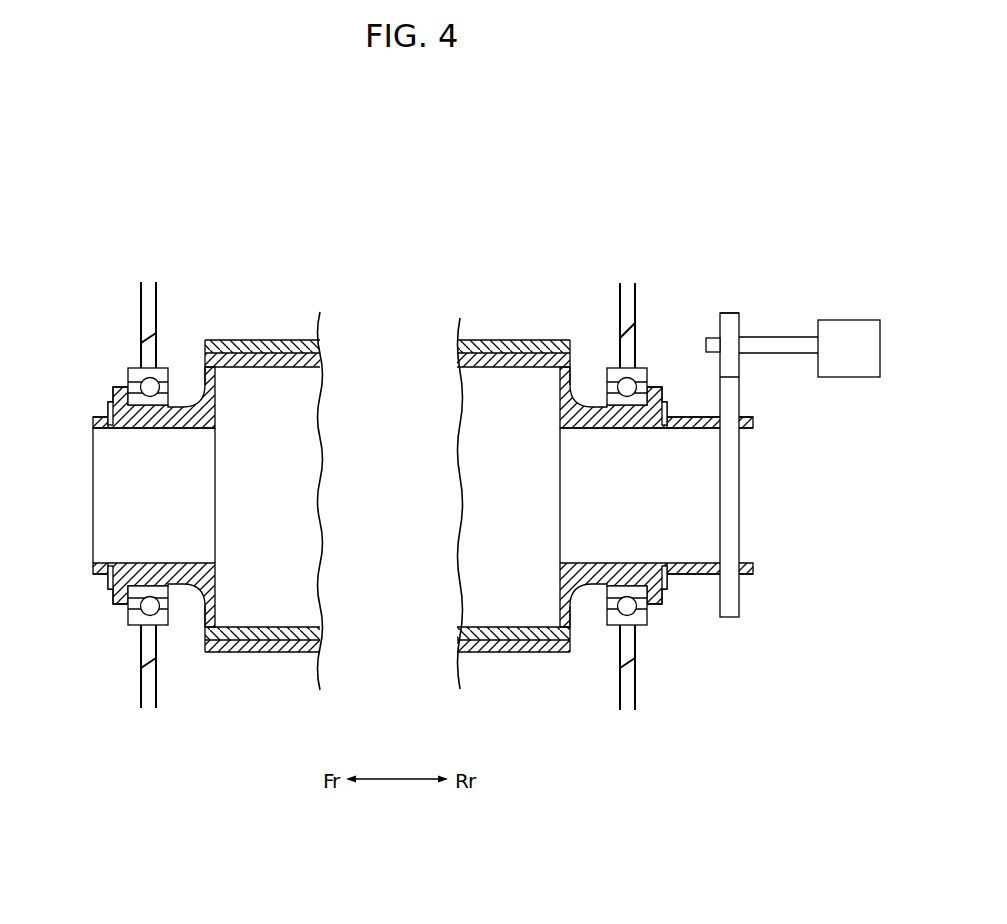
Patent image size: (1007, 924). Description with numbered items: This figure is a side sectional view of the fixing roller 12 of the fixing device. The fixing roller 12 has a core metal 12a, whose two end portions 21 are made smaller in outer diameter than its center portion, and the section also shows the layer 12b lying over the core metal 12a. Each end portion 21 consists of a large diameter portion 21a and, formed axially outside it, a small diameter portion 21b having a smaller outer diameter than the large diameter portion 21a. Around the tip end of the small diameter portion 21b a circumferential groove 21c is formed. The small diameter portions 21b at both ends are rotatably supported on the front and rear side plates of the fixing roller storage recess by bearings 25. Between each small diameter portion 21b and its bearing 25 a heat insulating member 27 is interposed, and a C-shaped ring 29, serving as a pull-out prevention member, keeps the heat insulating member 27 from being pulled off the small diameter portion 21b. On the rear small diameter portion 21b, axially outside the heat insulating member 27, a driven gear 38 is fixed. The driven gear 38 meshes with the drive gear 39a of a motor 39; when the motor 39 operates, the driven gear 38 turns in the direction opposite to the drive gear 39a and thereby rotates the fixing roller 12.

The fixing roller 12 is at (387, 446).
The core metal 12a is at (258, 346).
The inner layer of housing 12b is at (293, 355).
The end portion 21 is at (423, 457).
The large diameter portion 21a is at (190, 430).
The small diameter portion 21b is at (140, 430).
The circumferential groove 21c is at (117, 430).
The bearing 25 is at (131, 364).
The heat insulating member 27 is at (106, 396).
The C-shaped ring 29 is at (104, 414).
The driven gear 38 is at (757, 434).
The motor 39 is at (845, 318).
The drive gear 39a is at (731, 326).